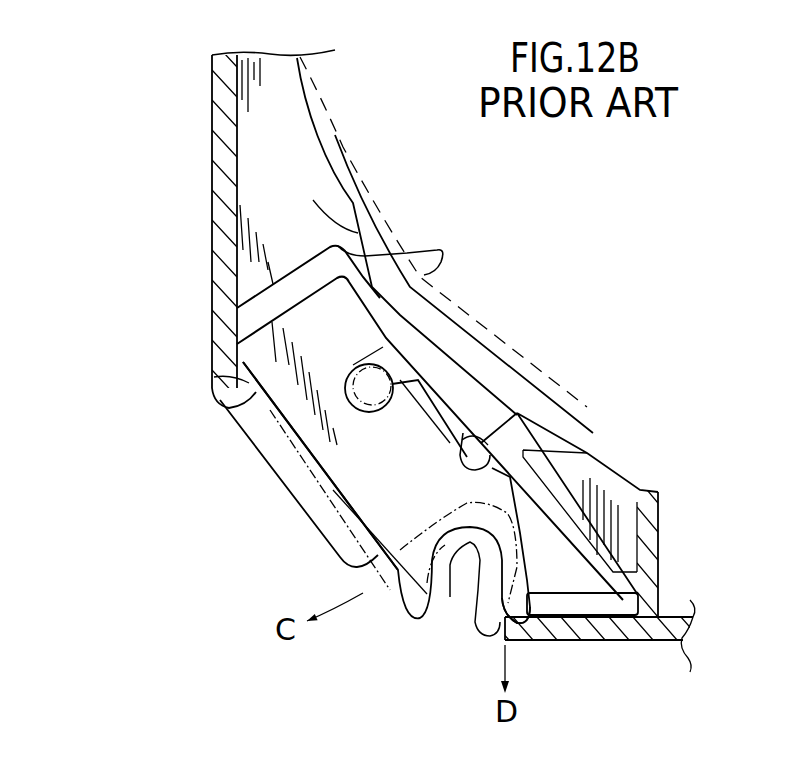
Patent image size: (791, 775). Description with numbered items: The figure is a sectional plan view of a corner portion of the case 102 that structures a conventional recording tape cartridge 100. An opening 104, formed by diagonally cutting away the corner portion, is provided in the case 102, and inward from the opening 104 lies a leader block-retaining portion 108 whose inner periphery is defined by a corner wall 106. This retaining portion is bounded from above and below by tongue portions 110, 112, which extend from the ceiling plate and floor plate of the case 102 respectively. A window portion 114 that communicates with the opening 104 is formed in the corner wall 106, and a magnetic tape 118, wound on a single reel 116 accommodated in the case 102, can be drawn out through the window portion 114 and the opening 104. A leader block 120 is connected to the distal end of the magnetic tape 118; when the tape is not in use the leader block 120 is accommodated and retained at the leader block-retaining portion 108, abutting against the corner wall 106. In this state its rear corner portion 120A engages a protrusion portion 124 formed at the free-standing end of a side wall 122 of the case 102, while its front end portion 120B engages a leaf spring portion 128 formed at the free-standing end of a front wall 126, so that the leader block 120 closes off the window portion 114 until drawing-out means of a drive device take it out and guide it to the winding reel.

The recording tape cartridge 100 is at (131, 238).
The case 102 is at (211, 192).
The opening 104 is at (293, 451).
The corner wall 106 is at (523, 487).
The leader block-retaining portion 108 is at (466, 440).
The tongue portion 110 is at (285, 468).
The tongue portion 112 is at (310, 488).
The window portion 114 is at (400, 332).
The single reel 116 is at (296, 62).
The magnetic tape 118 is at (372, 208).
The leader block 120 is at (338, 545).
The rear corner portion 120A is at (265, 353).
The front end portion 120B is at (524, 636).
The side wall 122 is at (212, 243).
The protrusion portion 124 is at (212, 388).
The front wall 126 is at (690, 625).
The leaf spring portion 128 is at (605, 632).